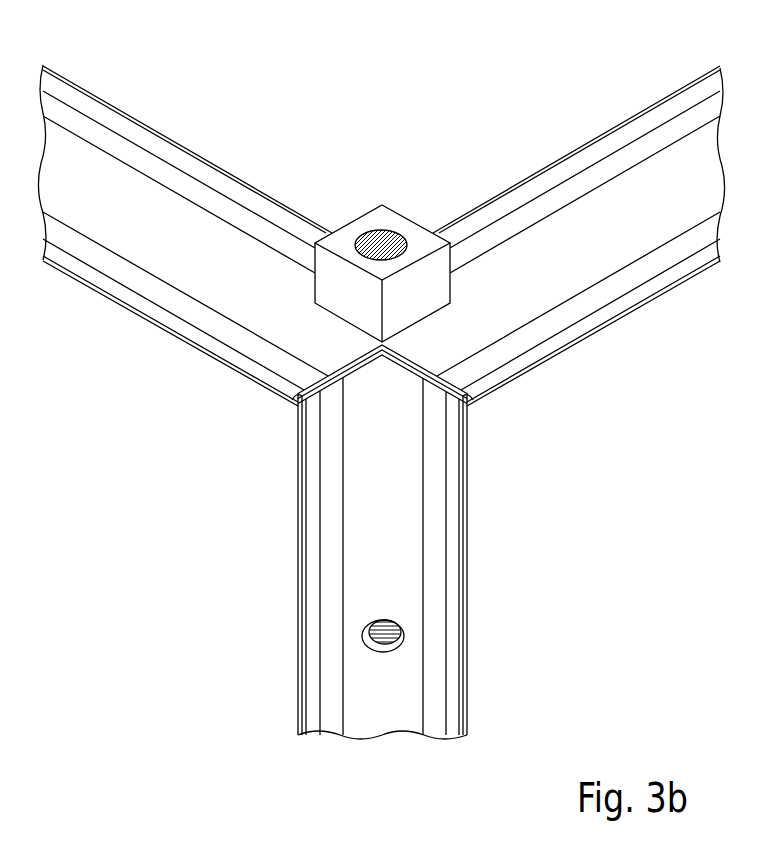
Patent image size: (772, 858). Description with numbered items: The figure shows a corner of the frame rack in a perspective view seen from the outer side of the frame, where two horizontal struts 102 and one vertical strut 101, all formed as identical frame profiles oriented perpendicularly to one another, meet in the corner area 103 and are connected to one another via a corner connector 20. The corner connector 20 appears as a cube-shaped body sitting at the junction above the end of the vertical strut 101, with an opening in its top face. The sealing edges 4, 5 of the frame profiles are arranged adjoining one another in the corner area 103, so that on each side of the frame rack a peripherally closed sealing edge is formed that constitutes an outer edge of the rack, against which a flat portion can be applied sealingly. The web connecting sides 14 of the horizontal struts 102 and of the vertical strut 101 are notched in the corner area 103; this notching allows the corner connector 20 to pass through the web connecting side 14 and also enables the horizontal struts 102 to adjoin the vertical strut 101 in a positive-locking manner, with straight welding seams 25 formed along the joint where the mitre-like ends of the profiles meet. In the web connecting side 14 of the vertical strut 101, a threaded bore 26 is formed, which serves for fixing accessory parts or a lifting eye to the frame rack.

The sealing edge 4 is at (197, 153).
The sealing edge 5 is at (122, 300).
The web connecting side 14 is at (107, 208).
The corner connector 20 is at (383, 222).
The welding seam 25 is at (299, 398).
The threaded bore 26 is at (381, 621).
The vertical strut 101 is at (373, 542).
The horizontal strut 102 is at (157, 84).
The corner 103 is at (358, 168).